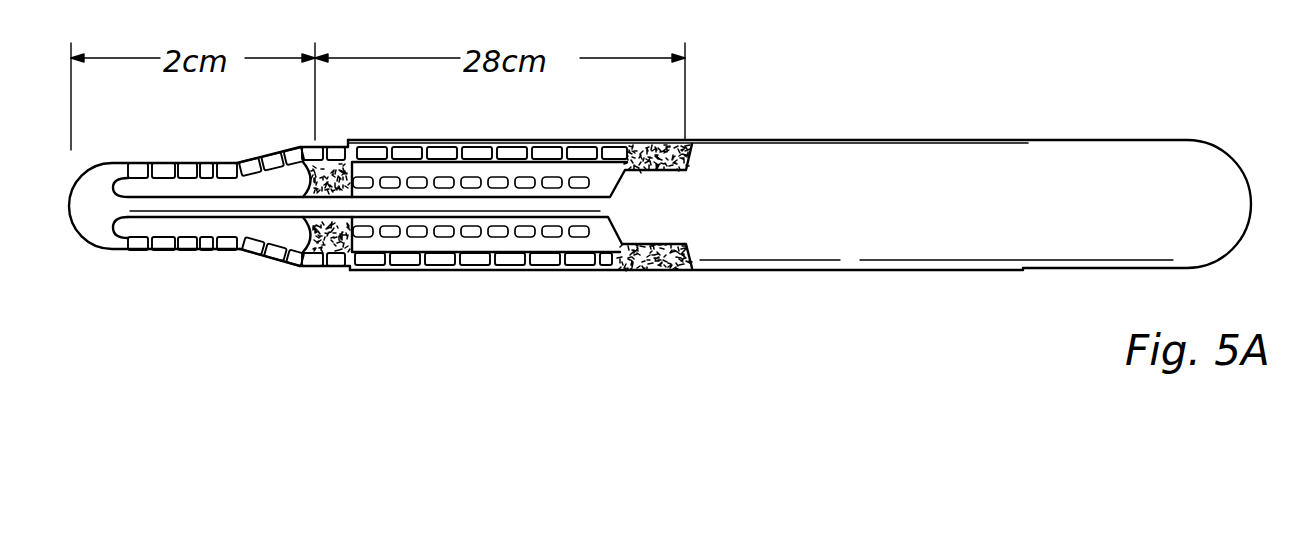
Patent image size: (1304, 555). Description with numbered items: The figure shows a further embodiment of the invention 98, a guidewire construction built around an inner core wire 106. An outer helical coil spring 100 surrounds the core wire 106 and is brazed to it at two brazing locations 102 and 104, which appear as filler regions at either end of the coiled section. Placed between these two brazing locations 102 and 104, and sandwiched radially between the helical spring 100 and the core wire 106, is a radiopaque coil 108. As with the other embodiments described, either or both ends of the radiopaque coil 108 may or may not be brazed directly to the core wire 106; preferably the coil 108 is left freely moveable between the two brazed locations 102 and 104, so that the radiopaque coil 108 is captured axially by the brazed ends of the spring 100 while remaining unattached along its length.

The further embodiment of the invention 98 is at (265, 278).
The outer helical coil spring 100 is at (645, 140).
The brazing location 102 is at (690, 143).
The brazing location 104 is at (323, 147).
The inner core wire 106 is at (1010, 155).
The radiopaque coil 108 is at (487, 177).